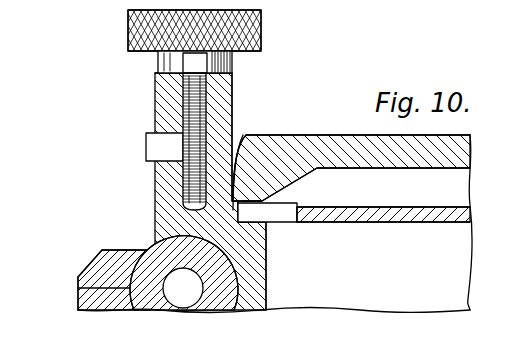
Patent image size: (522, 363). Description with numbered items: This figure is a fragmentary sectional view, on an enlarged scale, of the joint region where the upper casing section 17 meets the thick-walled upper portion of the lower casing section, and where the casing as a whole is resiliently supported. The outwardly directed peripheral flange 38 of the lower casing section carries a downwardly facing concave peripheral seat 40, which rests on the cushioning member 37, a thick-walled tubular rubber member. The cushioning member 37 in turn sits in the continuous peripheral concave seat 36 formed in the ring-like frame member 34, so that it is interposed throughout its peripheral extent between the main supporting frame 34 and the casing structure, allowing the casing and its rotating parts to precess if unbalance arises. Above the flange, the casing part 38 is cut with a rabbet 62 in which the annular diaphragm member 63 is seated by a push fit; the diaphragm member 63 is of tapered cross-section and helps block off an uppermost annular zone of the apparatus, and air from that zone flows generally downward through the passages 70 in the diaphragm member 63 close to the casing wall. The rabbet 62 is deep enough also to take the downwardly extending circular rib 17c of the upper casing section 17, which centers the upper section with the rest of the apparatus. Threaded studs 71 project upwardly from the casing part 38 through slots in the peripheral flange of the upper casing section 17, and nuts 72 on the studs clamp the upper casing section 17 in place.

The upper casing section 17 is at (326, 132).
The downwardly extending circular rib 17c is at (243, 200).
The ring-like frame member 34 is at (92, 263).
The peripheral concave seat 36 is at (78, 288).
The cushioning member 37 is at (146, 253).
The peripheral flange 38 is at (158, 184).
The downwardly facing concave peripheral seat 40 is at (237, 291).
The rabbet 62 is at (243, 135).
The annular diaphragm member 63 is at (368, 223).
The passages 70 is at (290, 226).
The threaded studs 71 is at (203, 88).
The nuts 72 is at (262, 34).